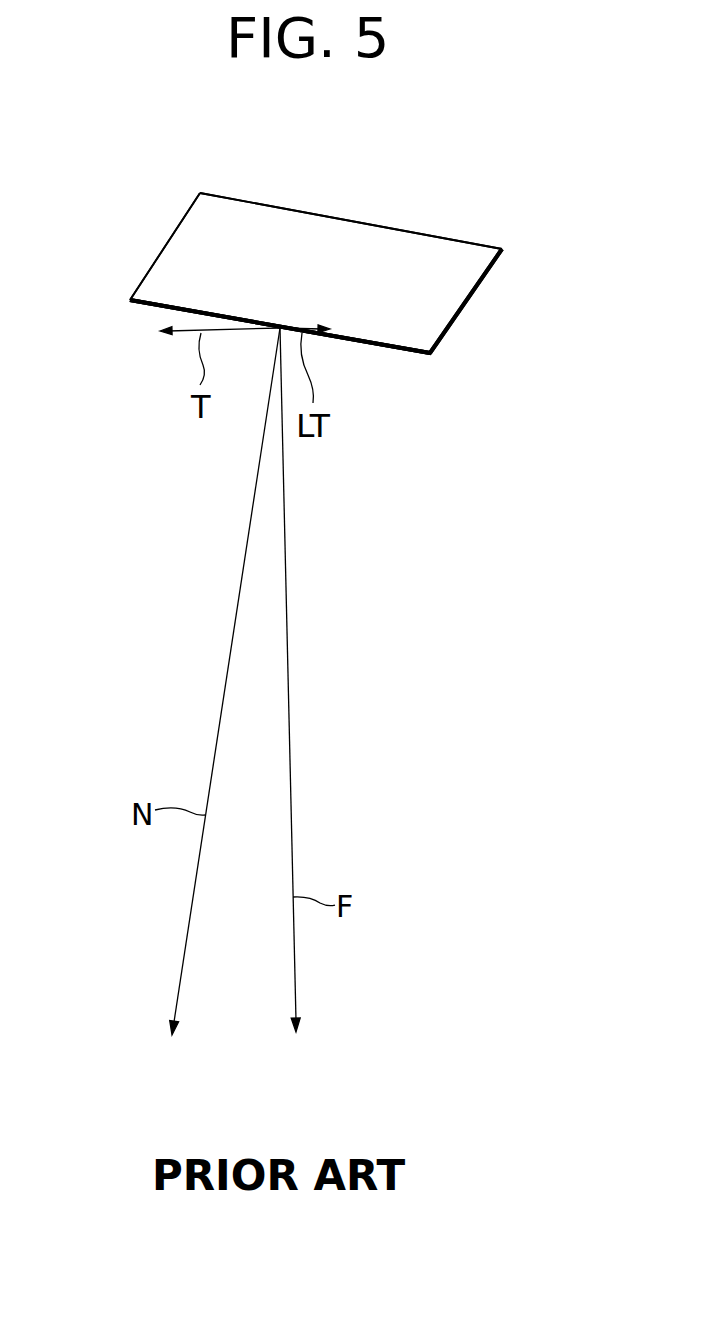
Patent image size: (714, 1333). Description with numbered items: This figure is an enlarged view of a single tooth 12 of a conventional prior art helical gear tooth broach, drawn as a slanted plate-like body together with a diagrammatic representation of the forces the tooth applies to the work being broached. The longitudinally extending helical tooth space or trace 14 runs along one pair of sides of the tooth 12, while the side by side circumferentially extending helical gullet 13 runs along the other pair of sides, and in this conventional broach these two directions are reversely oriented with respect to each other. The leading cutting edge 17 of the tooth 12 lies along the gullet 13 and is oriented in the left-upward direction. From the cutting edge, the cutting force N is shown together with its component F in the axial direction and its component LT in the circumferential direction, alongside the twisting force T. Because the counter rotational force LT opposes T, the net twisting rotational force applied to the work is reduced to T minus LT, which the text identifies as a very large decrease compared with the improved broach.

The tooth 12 is at (423, 323).
The gullet 13 is at (118, 315).
The helical tooth space 14 is at (132, 232).
The leading cutting edge 17 is at (380, 347).